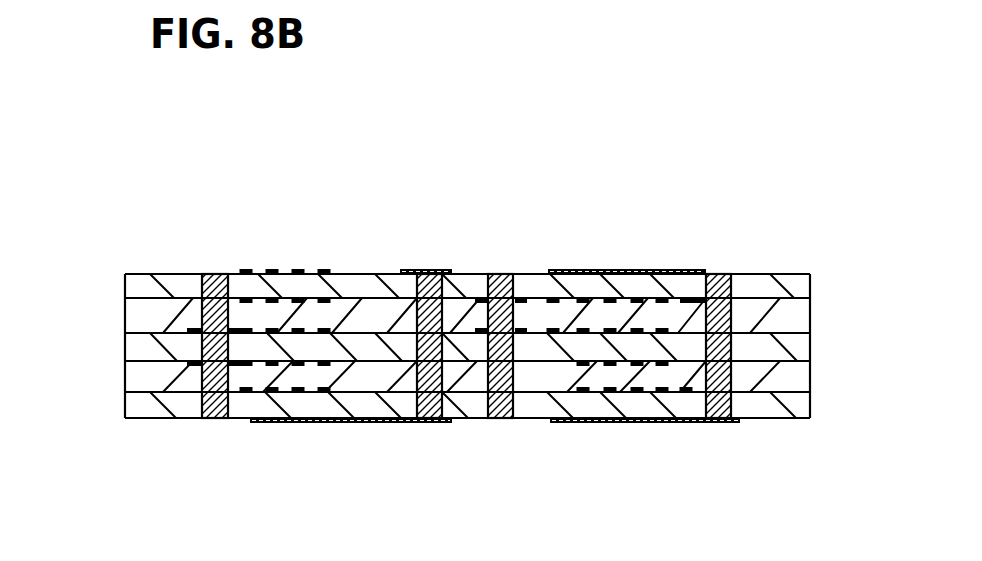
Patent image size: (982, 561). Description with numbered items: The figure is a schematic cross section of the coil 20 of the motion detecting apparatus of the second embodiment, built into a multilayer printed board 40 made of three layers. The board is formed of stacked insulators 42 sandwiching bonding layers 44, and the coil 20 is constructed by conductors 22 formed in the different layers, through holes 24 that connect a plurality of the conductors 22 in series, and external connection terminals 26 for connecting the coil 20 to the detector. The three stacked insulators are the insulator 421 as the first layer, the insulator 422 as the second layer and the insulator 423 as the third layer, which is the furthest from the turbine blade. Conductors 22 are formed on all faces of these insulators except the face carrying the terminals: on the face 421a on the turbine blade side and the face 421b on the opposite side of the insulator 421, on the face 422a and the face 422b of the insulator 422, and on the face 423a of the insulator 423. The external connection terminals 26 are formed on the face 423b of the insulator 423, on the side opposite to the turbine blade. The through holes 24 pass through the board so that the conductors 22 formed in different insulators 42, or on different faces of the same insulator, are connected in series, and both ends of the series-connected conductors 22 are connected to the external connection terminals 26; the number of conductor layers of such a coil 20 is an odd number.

The coil 20 is at (770, 196).
The conductor 22 is at (446, 339).
The through hole 24 is at (213, 272).
The external connection terminal 26 is at (348, 423).
The multilayer printed board 40 is at (139, 278).
The insulator 42 is at (462, 357).
The bonding layer 44 is at (132, 318).
The insulator 421 is at (125, 288).
The face 421a is at (798, 277).
The face 421b is at (810, 288).
The insulator 422 is at (133, 345).
The face 422a is at (800, 332).
The face 422b is at (810, 362).
The insulator 423 is at (130, 408).
The face 423a is at (803, 390).
The face 423b is at (783, 422).